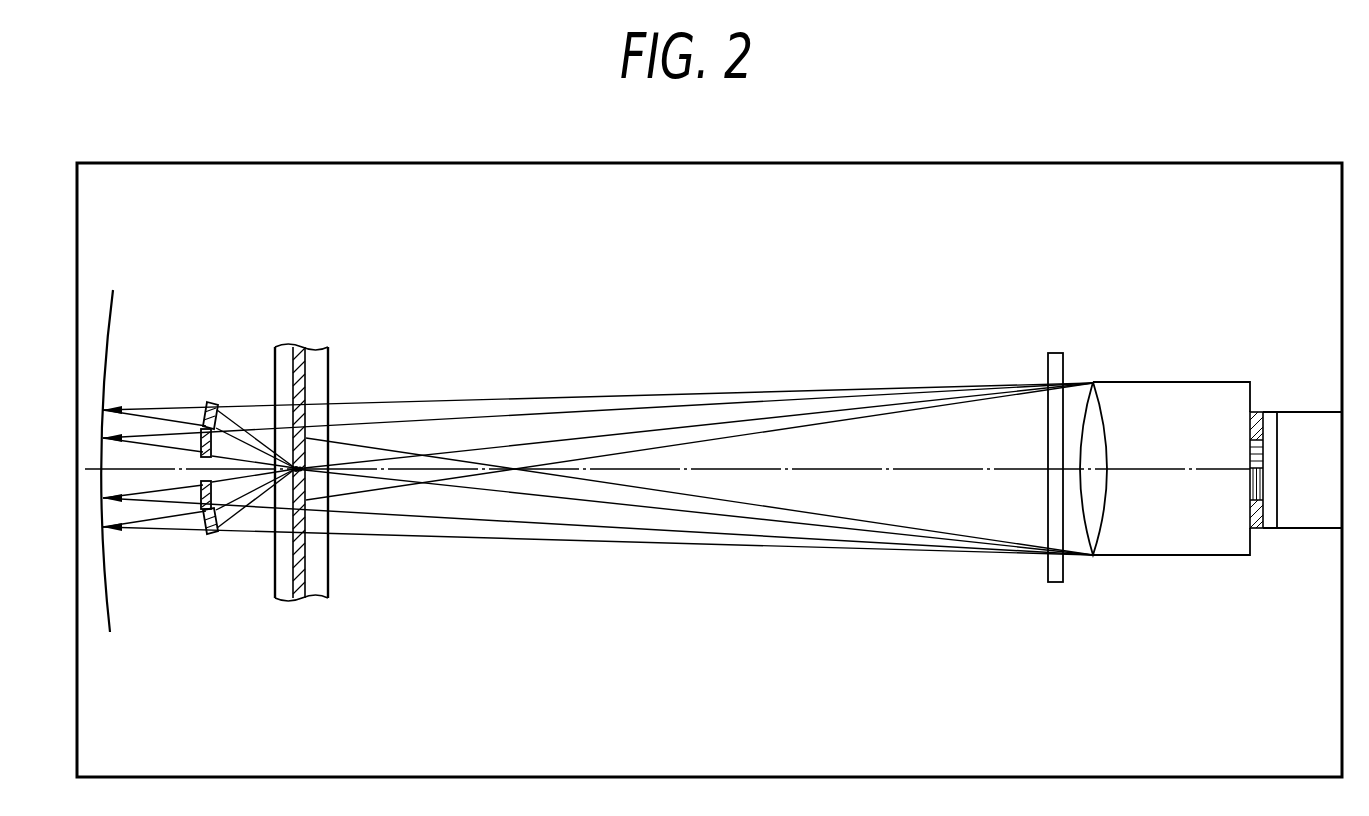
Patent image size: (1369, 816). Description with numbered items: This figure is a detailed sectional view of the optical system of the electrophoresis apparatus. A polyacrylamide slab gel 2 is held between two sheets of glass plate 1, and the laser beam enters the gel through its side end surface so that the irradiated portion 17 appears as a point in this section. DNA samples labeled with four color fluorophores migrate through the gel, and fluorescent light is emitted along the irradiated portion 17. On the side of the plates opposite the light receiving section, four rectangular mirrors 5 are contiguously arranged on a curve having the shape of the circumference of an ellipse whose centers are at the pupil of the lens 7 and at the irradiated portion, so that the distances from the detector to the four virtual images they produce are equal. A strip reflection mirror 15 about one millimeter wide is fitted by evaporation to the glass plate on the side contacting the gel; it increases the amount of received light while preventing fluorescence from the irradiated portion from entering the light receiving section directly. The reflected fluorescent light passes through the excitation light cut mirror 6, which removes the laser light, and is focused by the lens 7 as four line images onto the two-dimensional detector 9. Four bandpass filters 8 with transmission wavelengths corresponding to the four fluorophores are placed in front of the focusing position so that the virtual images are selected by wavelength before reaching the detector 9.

The glass plate 1 is at (322, 347).
The slab gel 2 is at (297, 347).
The rectangular mirrors 5 is at (213, 534).
The excitation light cut mirror 6 is at (1057, 364).
The lens 7 is at (1098, 407).
The bandpass filters 8 is at (1255, 410).
The two-dimensional detector 9 is at (1307, 420).
The strip reflection mirror 15 is at (299, 470).
The irradiated portion 17 is at (292, 465).